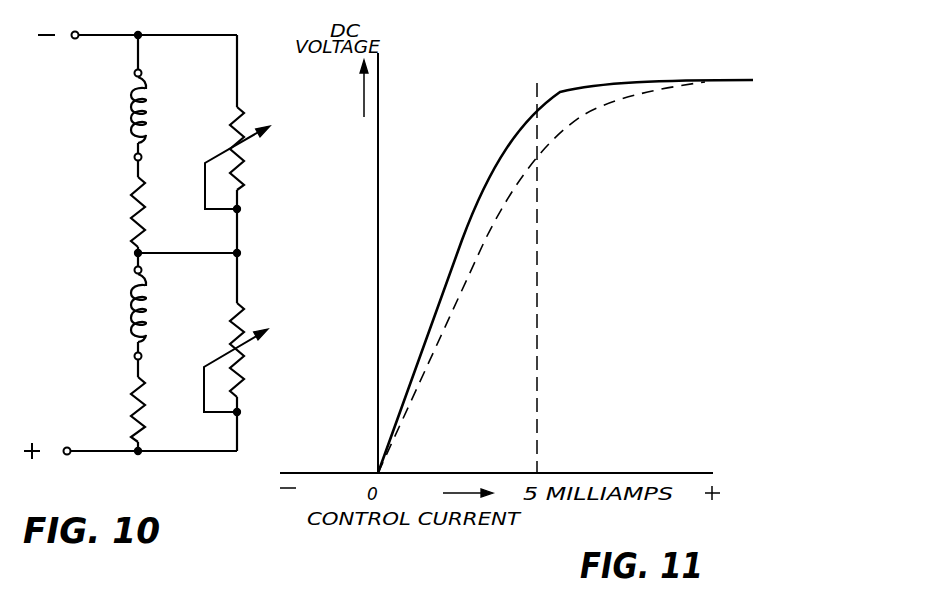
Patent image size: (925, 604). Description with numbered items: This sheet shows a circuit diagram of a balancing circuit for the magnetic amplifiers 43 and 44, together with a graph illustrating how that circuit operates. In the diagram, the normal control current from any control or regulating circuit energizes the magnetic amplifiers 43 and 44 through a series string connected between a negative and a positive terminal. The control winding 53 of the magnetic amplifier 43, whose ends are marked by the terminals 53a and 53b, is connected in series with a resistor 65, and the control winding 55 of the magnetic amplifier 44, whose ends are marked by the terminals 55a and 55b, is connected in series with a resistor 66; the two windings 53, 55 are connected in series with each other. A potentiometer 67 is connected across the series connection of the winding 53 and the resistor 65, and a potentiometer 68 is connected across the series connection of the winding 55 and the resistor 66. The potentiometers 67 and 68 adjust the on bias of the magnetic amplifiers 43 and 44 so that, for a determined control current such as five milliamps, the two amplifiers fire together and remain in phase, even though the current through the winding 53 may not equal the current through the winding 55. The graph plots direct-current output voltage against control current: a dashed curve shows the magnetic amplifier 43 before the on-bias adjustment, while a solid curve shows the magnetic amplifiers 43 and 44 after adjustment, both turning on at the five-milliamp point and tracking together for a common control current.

In FIG. 10, the control winding terminal 53a is at (135, 71).
In FIG. 10, the second control winding 53 is at (131, 111).
In FIG. 10, the control winding terminal 53b is at (134, 157).
In FIG. 10, the resistor 65 is at (130, 205).
In FIG. 10, the control winding terminal 55a is at (134, 253).
In FIG. 10, the control winding 55 is at (131, 306).
In FIG. 10, the control winding terminal 55b is at (134, 356).
In FIG. 10, the resistor 66 is at (130, 408).
In FIG. 10, the potentiometer 67 is at (244, 158).
In FIG. 10, the potentiometer 68 is at (242, 315).
In FIG. 11, the magnetic amplifier 43 is at (555, 138).
In FIG. 11, the magnetic amplifier 44 is at (615, 250).